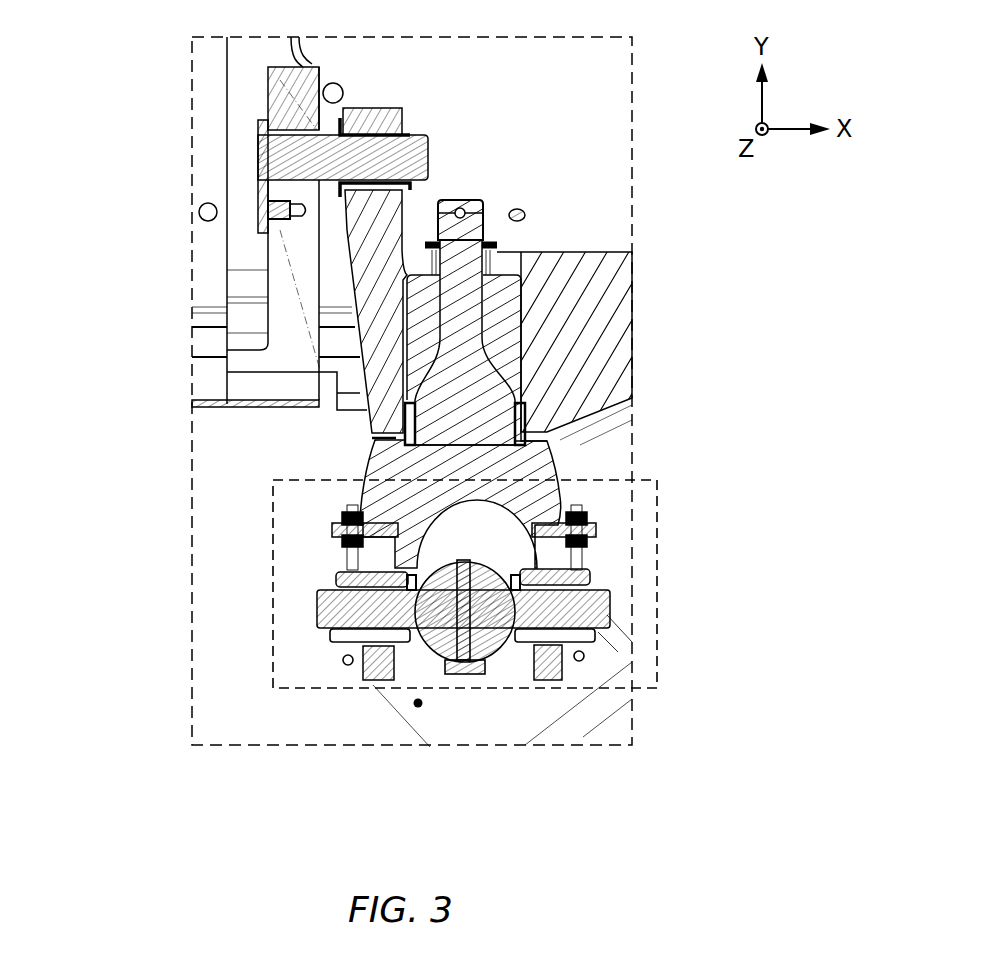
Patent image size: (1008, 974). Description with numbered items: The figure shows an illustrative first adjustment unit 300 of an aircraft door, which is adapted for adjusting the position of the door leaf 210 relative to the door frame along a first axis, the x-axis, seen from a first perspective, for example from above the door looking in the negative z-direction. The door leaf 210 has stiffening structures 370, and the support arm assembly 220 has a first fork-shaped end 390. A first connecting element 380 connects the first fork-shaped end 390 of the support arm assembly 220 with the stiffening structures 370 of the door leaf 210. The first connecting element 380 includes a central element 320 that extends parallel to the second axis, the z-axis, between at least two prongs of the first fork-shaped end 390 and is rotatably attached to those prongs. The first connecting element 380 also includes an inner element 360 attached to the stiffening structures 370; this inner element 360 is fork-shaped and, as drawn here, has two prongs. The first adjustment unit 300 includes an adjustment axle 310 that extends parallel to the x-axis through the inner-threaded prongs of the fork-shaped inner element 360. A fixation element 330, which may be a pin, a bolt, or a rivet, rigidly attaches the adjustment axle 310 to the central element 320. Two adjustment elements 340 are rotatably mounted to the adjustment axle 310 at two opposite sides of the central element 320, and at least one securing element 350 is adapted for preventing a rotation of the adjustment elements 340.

The door leaf 210 is at (155, 92).
The support arm assembly 220 is at (418, 703).
The first adjustment unit 300 is at (657, 530).
The adjustment axle 310 is at (593, 610).
The central element 320 is at (427, 587).
The fixation element 330 is at (463, 607).
The adjustment element 340 is at (400, 643).
The securing element 350 is at (345, 551).
The inner element 360 is at (380, 458).
The stiffening structures 370 is at (385, 257).
The first connecting element 380 is at (608, 440).
The first fork-shaped end 390 is at (403, 694).